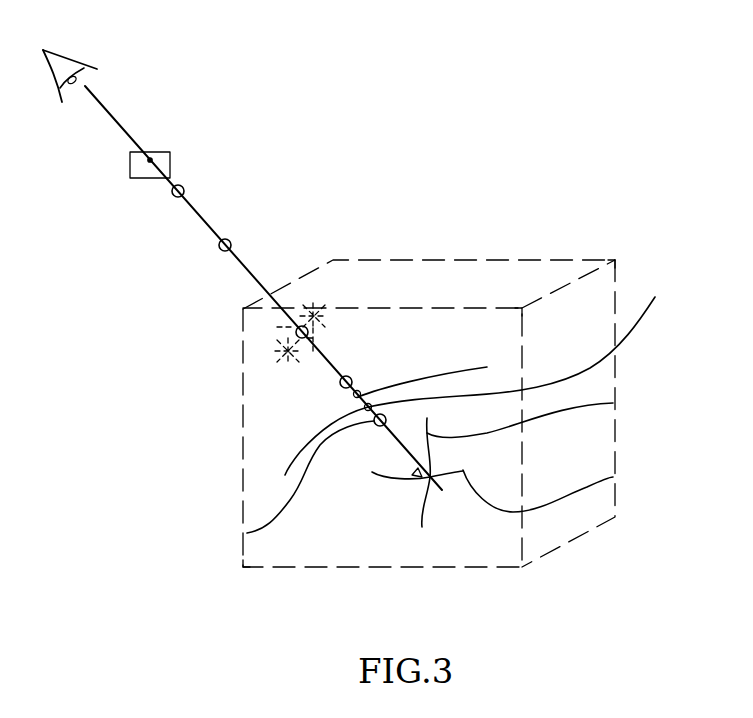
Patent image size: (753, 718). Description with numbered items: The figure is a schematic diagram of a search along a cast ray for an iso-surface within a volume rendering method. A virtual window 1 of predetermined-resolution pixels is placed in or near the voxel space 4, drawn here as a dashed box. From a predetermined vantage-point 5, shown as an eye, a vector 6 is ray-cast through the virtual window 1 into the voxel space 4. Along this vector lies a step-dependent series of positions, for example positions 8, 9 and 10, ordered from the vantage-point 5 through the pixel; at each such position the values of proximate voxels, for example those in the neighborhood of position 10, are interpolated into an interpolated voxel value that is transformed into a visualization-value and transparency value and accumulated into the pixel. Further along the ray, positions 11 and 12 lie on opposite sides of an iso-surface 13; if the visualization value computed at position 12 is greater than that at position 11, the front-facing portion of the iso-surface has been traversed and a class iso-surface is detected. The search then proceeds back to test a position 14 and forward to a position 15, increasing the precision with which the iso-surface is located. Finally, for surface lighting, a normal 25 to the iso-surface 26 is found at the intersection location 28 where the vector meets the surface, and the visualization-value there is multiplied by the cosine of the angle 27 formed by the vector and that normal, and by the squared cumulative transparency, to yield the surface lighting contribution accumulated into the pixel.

The virtual window 1 is at (160, 147).
The voxel space 4 is at (525, 260).
The vantage-point 5 is at (62, 59).
The vector 6 is at (103, 112).
The position on the vector 8 is at (183, 192).
The position on the vector 9 is at (231, 246).
The position on the vector 10 is at (296, 333).
The position on the ray 11 is at (340, 382).
The position on the ray 12 is at (247, 533).
The iso-surface 13 is at (463, 372).
The back-search position 14 is at (358, 388).
The forward-search position 15 is at (480, 375).
The normal 25 is at (372, 473).
The iso-surface 26 is at (613, 403).
The angle 27 is at (402, 476).
The intersection location 28 is at (613, 477).